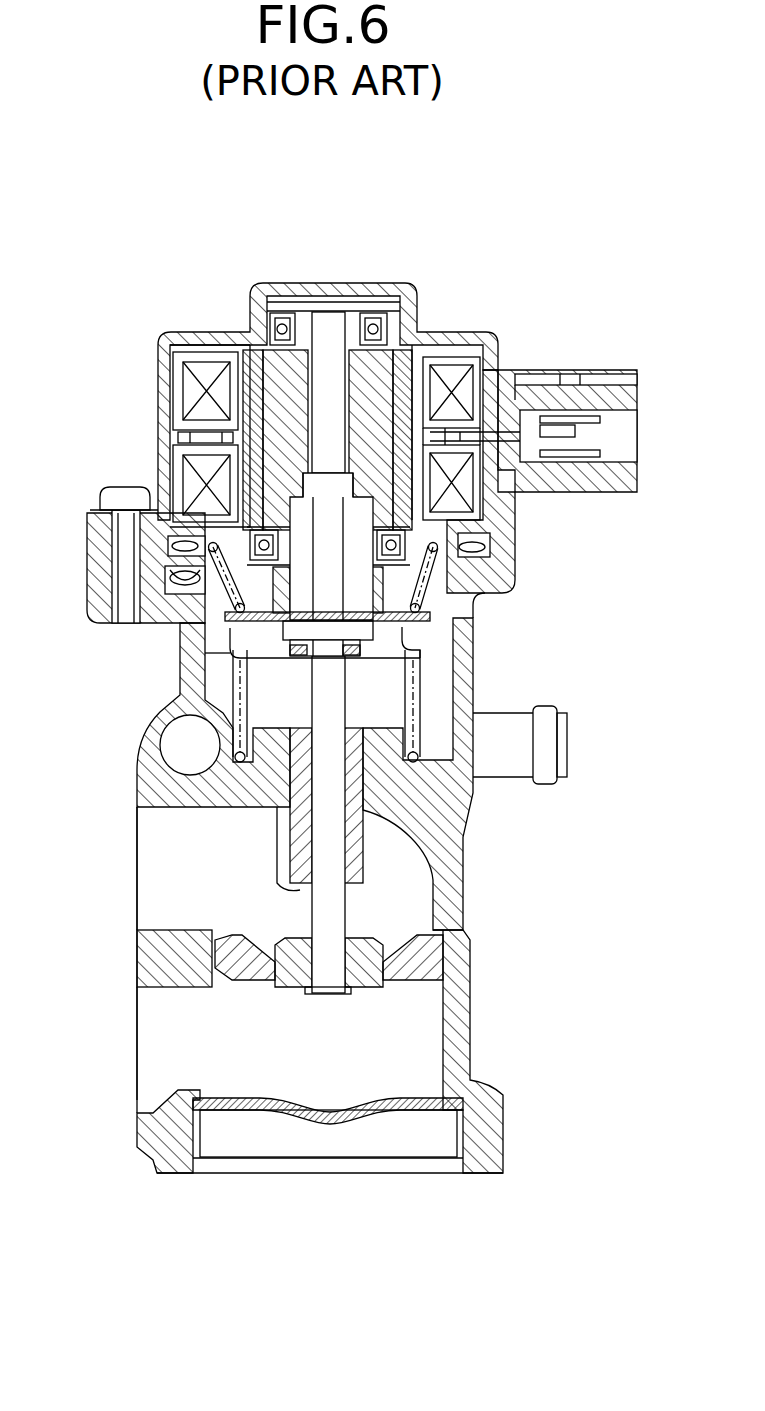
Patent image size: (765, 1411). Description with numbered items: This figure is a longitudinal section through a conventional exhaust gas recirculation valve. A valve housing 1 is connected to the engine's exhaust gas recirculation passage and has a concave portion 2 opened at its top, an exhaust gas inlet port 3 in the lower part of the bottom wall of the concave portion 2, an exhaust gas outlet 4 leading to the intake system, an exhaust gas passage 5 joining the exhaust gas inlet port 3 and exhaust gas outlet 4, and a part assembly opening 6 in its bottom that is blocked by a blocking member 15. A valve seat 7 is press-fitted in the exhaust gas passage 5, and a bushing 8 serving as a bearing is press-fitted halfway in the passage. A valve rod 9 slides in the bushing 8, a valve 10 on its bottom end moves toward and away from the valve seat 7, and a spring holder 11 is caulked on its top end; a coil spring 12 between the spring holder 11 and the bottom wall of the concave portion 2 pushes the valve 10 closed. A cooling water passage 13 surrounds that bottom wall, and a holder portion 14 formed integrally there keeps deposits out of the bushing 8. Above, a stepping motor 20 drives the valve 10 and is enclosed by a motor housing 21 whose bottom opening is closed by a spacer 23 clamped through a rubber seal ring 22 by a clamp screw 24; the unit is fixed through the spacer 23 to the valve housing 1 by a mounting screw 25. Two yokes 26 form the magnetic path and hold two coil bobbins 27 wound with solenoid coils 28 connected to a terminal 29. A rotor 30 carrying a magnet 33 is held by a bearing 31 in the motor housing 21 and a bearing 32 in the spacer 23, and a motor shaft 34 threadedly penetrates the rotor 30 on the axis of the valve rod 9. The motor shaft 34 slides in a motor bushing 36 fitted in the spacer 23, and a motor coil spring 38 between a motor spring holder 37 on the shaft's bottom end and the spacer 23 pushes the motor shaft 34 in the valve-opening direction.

The valve housing 1 is at (321, 886).
The concave portion 2 is at (440, 688).
The exhaust gas inlet port 3 is at (165, 1053).
The exhaust gas outlet 4 is at (165, 883).
The exhaust gas passage 5 is at (430, 1055).
The part assembly opening 6 is at (313, 1135).
The valve seat 7 is at (428, 958).
The bushing 8 is at (184, 715).
The valve rod 9 is at (333, 915).
The valve 10 is at (367, 980).
The spring holder 11 is at (267, 667).
The coil spring 12 is at (207, 683).
The cooling water passage 13 is at (175, 740).
The holder portion 14 is at (287, 840).
The blocking member 15 is at (355, 1118).
The stepping motor 20 is at (329, 402).
The motor housing 21 is at (212, 328).
The rubber seal ring 22 is at (172, 545).
The spacer 23 is at (508, 558).
The clamp screw 24 is at (172, 578).
The mounting screw 25 is at (123, 487).
The yokes 26 is at (438, 355).
The coil bobbins 27 is at (467, 393).
The solenoid coils 28 is at (512, 390).
The terminal 29 is at (572, 416).
The rotor 30 is at (398, 372).
The bearing 31 is at (378, 328).
The bearing 32 is at (393, 537).
The magnet 33 is at (245, 395).
The motor shaft 34 is at (330, 320).
The motor bushing 36 is at (420, 633).
The motor spring holder 37 is at (427, 620).
The motor coil spring 38 is at (430, 580).